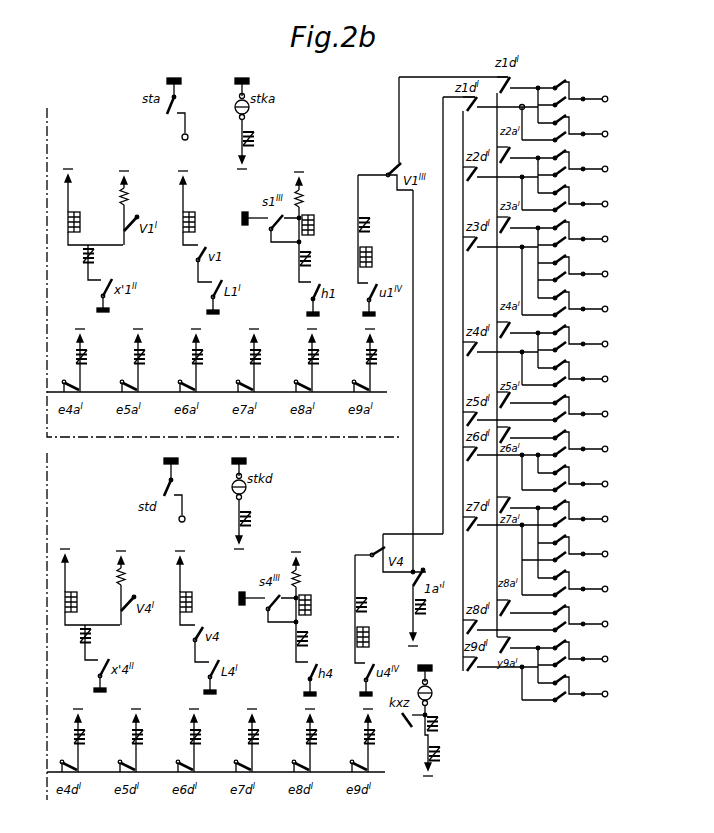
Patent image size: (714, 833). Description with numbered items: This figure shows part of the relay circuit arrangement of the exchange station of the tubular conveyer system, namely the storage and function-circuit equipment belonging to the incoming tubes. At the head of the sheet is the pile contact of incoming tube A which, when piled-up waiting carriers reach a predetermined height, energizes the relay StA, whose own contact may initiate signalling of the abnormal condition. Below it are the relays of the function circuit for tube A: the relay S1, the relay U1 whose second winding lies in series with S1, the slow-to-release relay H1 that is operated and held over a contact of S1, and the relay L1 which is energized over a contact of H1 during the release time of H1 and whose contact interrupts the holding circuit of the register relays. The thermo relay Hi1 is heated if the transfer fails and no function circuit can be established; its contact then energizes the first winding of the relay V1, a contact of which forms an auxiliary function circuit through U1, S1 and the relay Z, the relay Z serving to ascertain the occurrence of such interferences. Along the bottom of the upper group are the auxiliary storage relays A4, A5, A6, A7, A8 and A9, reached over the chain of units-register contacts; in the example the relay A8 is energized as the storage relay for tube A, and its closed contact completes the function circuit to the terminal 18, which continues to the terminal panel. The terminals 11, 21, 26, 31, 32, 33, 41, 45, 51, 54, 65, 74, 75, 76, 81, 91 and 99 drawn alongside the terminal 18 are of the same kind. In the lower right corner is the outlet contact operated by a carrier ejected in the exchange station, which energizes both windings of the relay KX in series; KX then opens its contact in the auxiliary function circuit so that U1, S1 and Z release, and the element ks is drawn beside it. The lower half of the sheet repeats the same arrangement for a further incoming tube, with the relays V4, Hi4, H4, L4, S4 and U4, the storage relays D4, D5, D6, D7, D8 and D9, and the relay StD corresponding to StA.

The relay V1 is at (136, 207).
The thermo relay Hi1 is at (103, 262).
The relay H1 is at (318, 228).
The relay L1 is at (315, 262).
The relay S1 is at (375, 204).
The relay U1 is at (369, 249).
The relay A4 is at (91, 360).
The relay A5 is at (149, 360).
The relay A6 is at (207, 360).
The relay A7 is at (266, 360).
The auxiliary relay A8 is at (323, 360).
The relay A9 is at (381, 360).
The relay StA is at (263, 140).
The relay V4 is at (133, 587).
The relay Hi4 is at (100, 642).
The relay H4 is at (315, 608).
The relay L4 is at (312, 642).
The relay S4 is at (372, 584).
The relay U4 is at (366, 629).
The relay D4 is at (90, 740).
The relay D5 is at (148, 740).
The relay D6 is at (206, 740).
The relay D7 is at (264, 740).
The relay D8 is at (322, 740).
The relay D9 is at (380, 740).
The relay StD is at (260, 520).
The relay Z is at (426, 613).
The relay KX is at (447, 740).
The signal lamp ks is at (434, 685).
The output terminal 11 is at (588, 93).
The terminal 18 is at (588, 128).
The output terminal 21 is at (588, 163).
The output terminal 26 is at (588, 198).
The output terminal 31 is at (588, 233).
The output terminal 32 is at (588, 268).
The output terminal 33 is at (588, 303).
The output terminal 41 is at (588, 338).
The output terminal 45 is at (588, 373).
The output terminal 51 is at (588, 408).
The output terminal 54 is at (588, 443).
The output terminal 65 is at (588, 478).
The output terminal 74 is at (588, 513).
The output terminal 75 is at (588, 548).
The output terminal 76 is at (588, 583).
The output terminal 81 is at (586, 618).
The output terminal 91 is at (586, 653).
The output terminal 99 is at (588, 688).